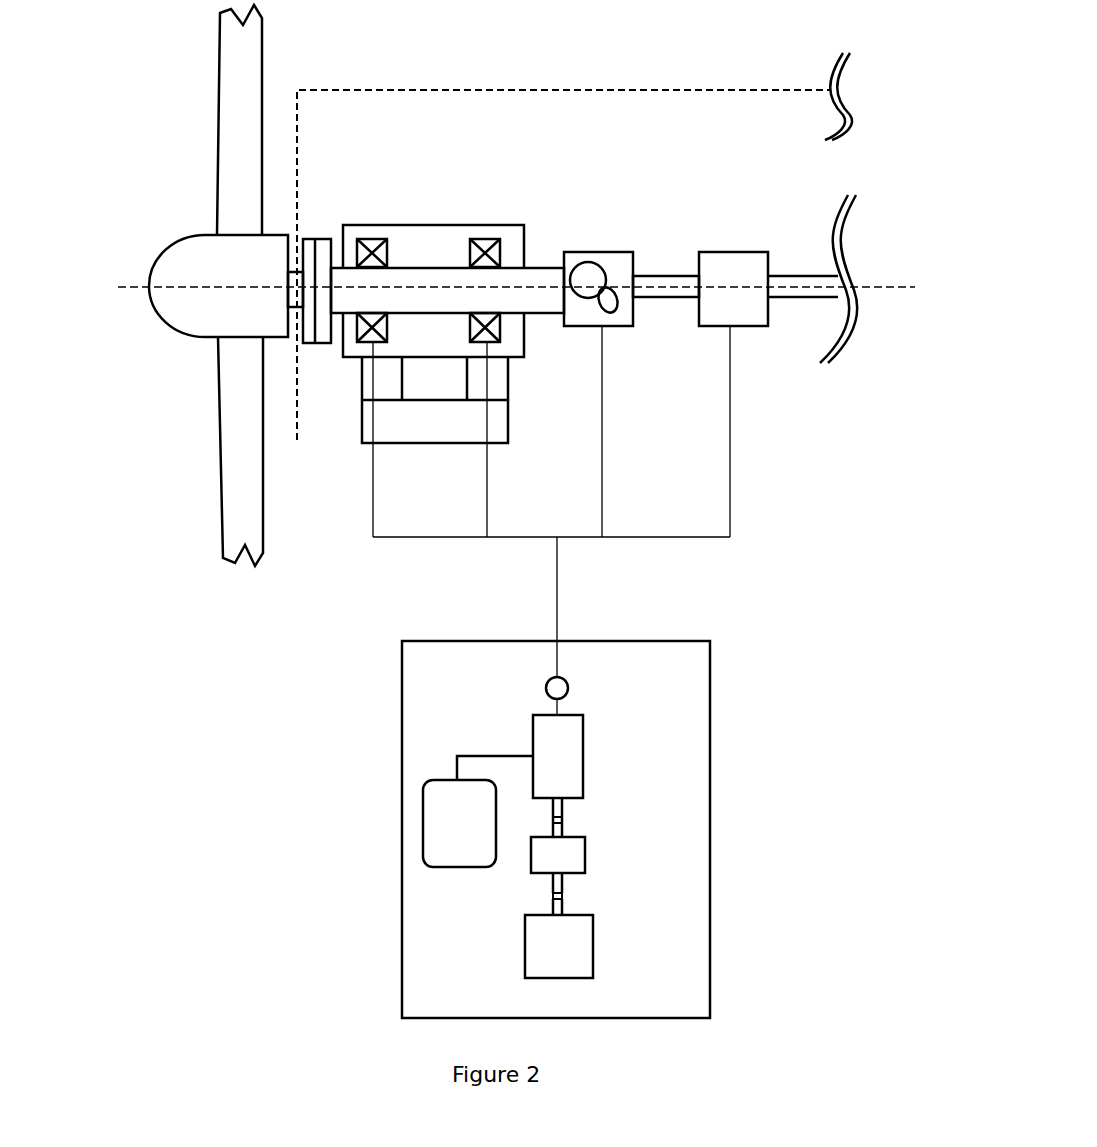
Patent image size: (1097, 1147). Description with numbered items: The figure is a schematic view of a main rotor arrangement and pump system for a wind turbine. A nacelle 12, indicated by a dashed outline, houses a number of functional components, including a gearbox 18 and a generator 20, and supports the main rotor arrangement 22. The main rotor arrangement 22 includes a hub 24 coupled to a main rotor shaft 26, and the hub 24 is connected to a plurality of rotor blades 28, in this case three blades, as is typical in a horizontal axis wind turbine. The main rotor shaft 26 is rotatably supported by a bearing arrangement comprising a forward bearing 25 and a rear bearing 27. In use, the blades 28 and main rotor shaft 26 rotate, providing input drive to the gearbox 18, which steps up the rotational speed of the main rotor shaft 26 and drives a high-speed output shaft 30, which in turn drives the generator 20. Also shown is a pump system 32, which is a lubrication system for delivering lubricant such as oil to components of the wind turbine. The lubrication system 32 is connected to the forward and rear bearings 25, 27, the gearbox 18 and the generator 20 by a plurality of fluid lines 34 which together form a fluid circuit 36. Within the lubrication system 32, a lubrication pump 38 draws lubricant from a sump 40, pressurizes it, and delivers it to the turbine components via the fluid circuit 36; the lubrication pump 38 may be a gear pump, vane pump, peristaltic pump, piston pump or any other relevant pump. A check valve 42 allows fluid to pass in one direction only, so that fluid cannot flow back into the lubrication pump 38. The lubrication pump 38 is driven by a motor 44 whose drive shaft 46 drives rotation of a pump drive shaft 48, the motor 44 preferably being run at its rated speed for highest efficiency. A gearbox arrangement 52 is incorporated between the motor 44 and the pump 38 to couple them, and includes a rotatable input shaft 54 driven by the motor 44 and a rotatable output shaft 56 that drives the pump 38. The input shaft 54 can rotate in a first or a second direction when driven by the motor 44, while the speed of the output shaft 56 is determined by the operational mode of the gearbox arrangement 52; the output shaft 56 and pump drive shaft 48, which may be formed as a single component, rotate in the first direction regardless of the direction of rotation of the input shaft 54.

The nacelle 12 is at (515, 89).
The gearbox 18 is at (618, 328).
The generator 20 is at (740, 328).
The main rotor arrangement 22 is at (140, 186).
The hub 24 is at (207, 300).
The forward bearing 25 is at (368, 239).
The main rotor shaft 26 is at (538, 263).
The rear bearing 27 is at (480, 239).
The rotor blades 28 is at (232, 135).
The high-speed output shaft 30 is at (657, 274).
The pump system 32 is at (364, 777).
The fluid lines 34 is at (373, 468).
The fluid circuit 36 is at (591, 501).
The lubrication pump 38 is at (583, 742).
The sump 40 is at (458, 870).
The check valve 42 is at (569, 689).
The motor 44 is at (593, 950).
The drive shaft 46 is at (565, 903).
The pump drive shaft 48 is at (563, 810).
The gearbox arrangement 52 is at (597, 858).
The input shaft 54 is at (548, 881).
The output shaft 56 is at (563, 822).